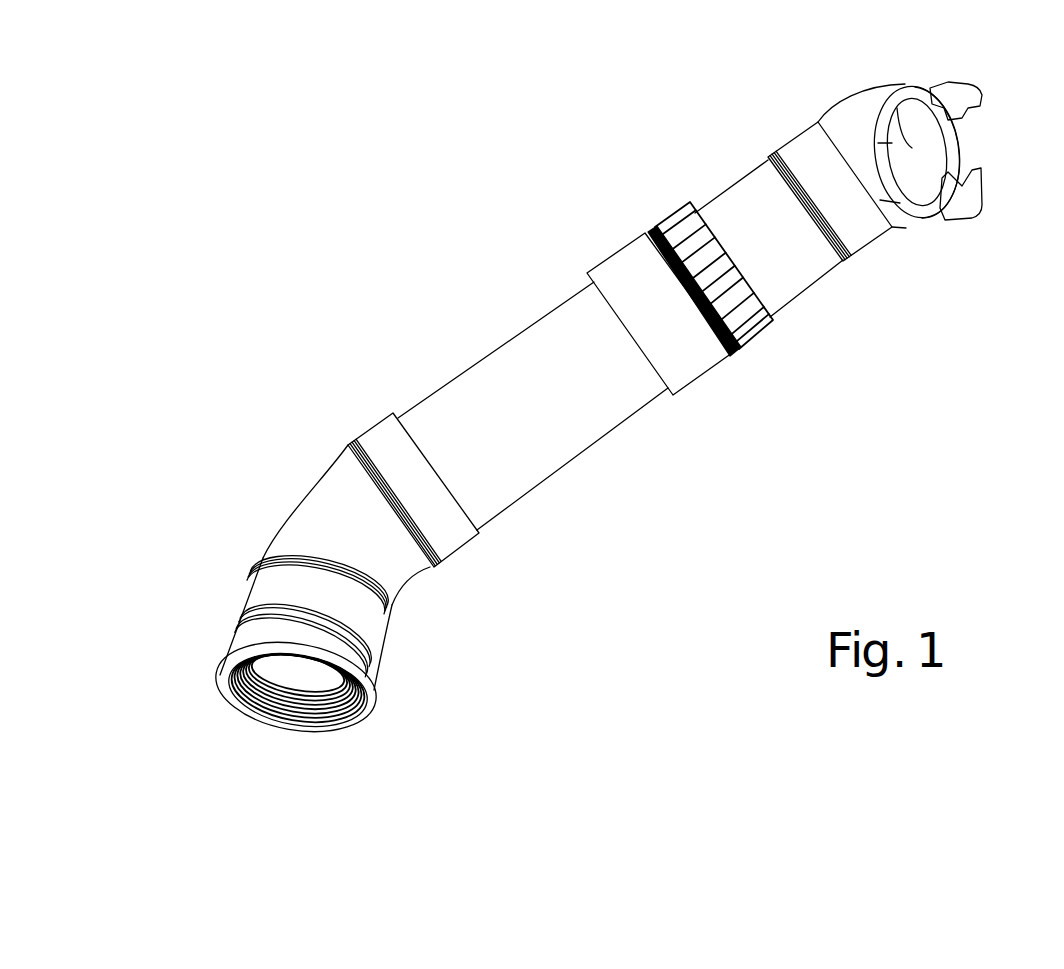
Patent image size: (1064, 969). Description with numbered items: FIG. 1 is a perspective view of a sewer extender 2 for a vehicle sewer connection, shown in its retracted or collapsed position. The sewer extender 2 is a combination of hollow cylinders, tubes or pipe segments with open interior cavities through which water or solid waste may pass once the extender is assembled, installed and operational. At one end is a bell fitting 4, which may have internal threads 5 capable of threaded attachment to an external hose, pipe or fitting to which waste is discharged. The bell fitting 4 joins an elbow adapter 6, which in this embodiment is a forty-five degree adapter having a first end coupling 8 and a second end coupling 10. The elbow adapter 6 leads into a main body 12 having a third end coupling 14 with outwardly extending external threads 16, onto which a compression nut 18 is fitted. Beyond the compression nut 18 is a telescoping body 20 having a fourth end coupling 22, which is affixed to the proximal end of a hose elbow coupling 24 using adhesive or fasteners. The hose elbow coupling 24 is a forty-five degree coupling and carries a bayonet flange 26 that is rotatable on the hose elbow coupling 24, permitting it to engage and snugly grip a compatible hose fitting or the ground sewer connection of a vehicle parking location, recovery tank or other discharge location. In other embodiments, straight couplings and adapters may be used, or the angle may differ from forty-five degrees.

The sewer extender 2 is at (316, 277).
The bell fitting 4 is at (248, 637).
The internal threads 5 is at (286, 702).
The elbow adapter 6 is at (319, 525).
The first end coupling 8 is at (282, 582).
The second end coupling 10 is at (381, 479).
The main body 12 is at (542, 419).
The third end coupling 14 is at (611, 306).
The external threads 16 is at (640, 265).
The compression nut 18 is at (707, 249).
The telescoping body 20 is at (796, 238).
The fourth end coupling 22 is at (862, 200).
The hose elbow coupling 24 is at (884, 138).
The bayonet flange 26 is at (964, 142).